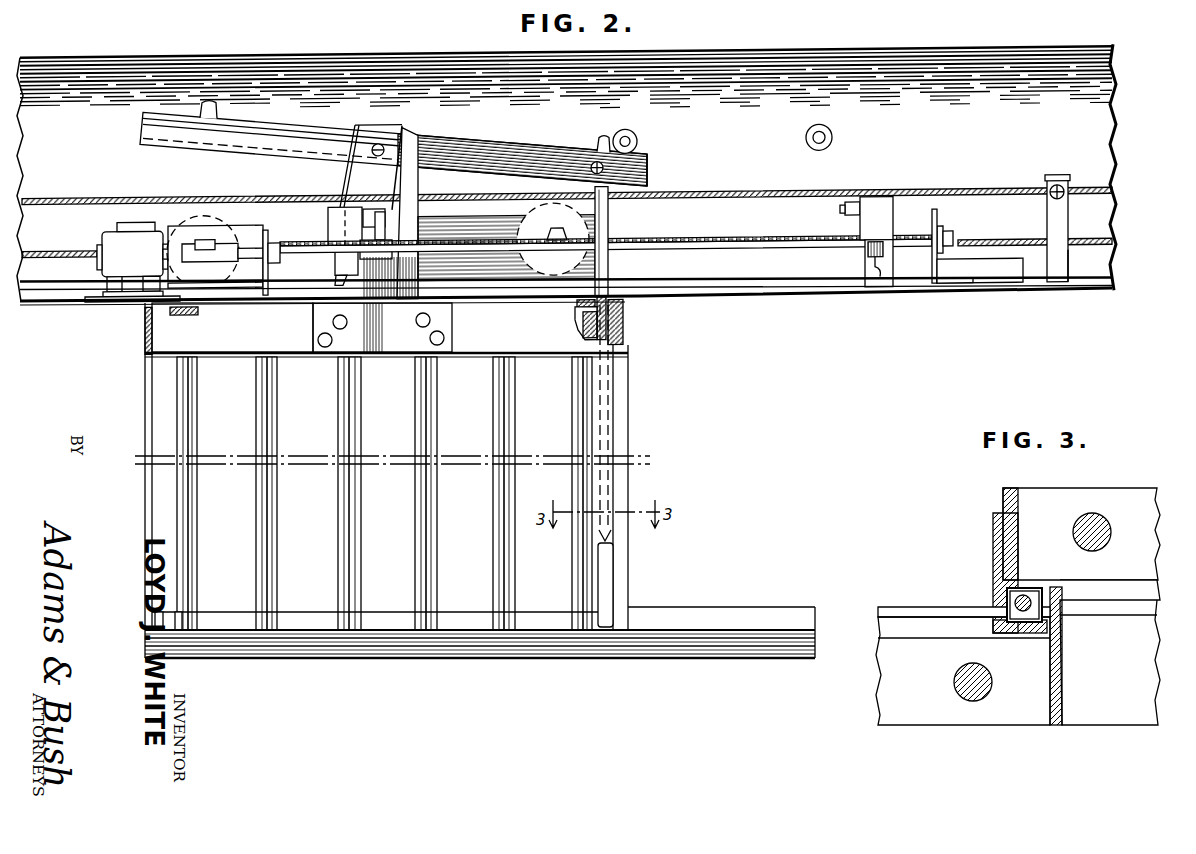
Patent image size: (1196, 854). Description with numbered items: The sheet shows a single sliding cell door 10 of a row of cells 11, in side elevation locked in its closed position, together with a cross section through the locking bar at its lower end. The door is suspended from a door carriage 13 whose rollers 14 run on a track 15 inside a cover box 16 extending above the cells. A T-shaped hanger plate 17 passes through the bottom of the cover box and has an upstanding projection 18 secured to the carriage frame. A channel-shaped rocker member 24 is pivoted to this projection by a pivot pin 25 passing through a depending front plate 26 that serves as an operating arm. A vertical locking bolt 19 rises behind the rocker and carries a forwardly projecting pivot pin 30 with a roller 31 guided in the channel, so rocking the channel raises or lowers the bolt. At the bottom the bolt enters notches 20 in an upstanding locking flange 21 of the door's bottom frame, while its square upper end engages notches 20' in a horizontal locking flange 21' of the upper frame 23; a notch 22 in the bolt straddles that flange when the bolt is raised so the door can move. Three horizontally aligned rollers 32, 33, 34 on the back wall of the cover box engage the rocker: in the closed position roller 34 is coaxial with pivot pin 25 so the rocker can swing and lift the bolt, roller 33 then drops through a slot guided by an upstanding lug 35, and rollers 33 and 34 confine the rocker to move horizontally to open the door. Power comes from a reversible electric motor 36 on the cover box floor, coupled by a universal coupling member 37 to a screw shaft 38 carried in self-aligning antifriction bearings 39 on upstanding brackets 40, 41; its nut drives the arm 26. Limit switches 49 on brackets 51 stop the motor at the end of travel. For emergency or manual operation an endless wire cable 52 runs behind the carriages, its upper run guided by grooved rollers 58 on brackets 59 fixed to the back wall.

In FIG. 2, the sliding cell door 10 is at (432, 528).
In FIG. 3, the sliding cell door 10 is at (972, 703).
In FIG. 3, the cell 11 is at (1098, 520).
In FIG. 2, the door carriage 13 is at (483, 268).
In FIG. 2, the rollers 14 is at (609, 205).
In FIG. 2, the track 15 is at (990, 280).
In FIG. 2, the cover box 16 is at (940, 50).
In FIG. 2, the hanger plate 17 is at (378, 355).
In FIG. 2, the upstanding projection 18 is at (420, 146).
In FIG. 2, the vertical locking bolt 19 is at (612, 572).
In FIG. 3, the vertical locking bolt 19 is at (1030, 592).
In FIG. 2, the notches 20 is at (414, 605).
In FIG. 2, the notches 20' is at (389, 324).
In FIG. 2, the upstanding locking flange 21 is at (480, 648).
In FIG. 3, the upstanding locking flange 21 is at (964, 605).
In FIG. 2, the horizontal locking flange 21' is at (232, 327).
In FIG. 2, the notch 22 is at (628, 322).
In FIG. 2, the upper frame 23 is at (556, 340).
In FIG. 2, the rocker member 24 is at (292, 122).
In FIG. 2, the pivot pin 25 is at (378, 141).
In FIG. 2, the front plate 26 is at (352, 177).
In FIG. 2, the pivot pin 30 is at (590, 150).
In FIG. 2, the roller 31 is at (652, 174).
In FIG. 2, the roller 32 is at (834, 140).
In FIG. 2, the roller 33 is at (640, 136).
In FIG. 2, the roller 34 is at (403, 126).
In FIG. 2, the upstanding lug 35 is at (217, 102).
In FIG. 2, the reversible electric motor 36 is at (146, 257).
In FIG. 2, the universal coupling member 37 is at (215, 238).
In FIG. 2, the screw shaft 38 is at (752, 242).
In FIG. 2, the self-aligning antifriction bearings 39 is at (276, 258).
In FIG. 2, the upstanding bracket 40 is at (948, 226).
In FIG. 2, the upstanding bracket 41 is at (262, 284).
In FIG. 2, the limit switches 49 is at (367, 212).
In FIG. 2, the brackets 51 is at (884, 284).
In FIG. 2, the endless wire cable 52 is at (121, 197).
In FIG. 2, the grooved rollers 58 is at (1070, 205).
In FIG. 2, the brackets 59 is at (1066, 258).